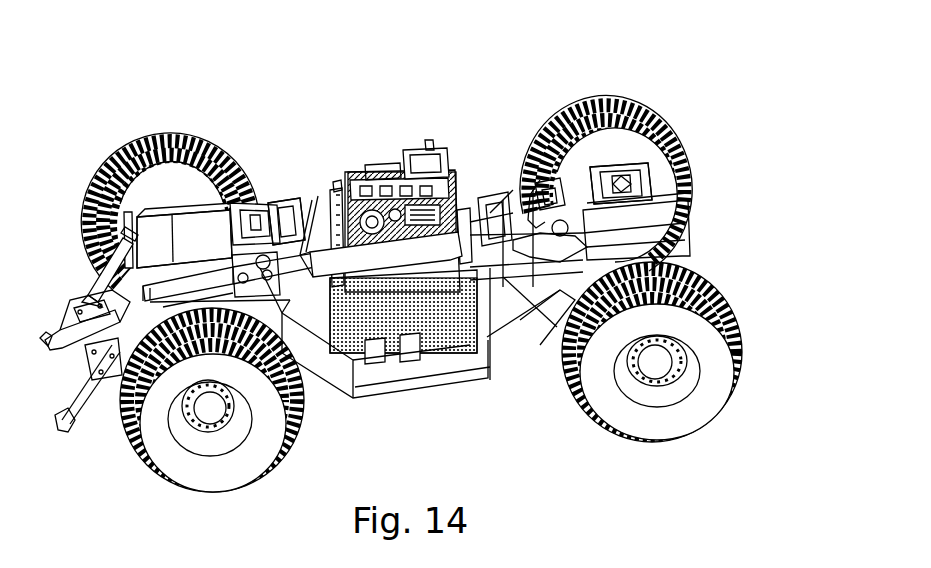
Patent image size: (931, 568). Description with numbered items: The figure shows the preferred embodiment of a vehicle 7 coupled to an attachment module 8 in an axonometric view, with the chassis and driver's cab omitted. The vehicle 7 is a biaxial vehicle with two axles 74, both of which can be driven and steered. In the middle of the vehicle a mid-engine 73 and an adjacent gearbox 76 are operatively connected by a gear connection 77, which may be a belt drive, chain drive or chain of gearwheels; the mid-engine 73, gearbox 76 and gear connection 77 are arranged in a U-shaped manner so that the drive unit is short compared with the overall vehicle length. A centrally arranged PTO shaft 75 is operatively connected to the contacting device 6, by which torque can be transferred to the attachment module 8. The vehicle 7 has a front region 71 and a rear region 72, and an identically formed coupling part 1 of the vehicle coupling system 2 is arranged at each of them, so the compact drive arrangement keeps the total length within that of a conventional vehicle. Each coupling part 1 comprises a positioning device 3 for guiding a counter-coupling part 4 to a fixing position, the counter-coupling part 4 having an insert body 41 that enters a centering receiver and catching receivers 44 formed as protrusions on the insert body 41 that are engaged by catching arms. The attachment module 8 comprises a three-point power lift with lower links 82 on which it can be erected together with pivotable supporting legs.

The coupling part 1 is at (285, 205).
The vehicle coupling system 2 is at (460, 204).
The positioning device 3 is at (623, 223).
The counter-coupling part 4 is at (147, 138).
The insert body 41 is at (184, 239).
The catching receiver 44 is at (213, 150).
The contacting device 6 is at (315, 198).
The vehicle 7 is at (520, 340).
The attachment module 8 is at (110, 265).
The front region 71 is at (720, 140).
The rear region 72 is at (243, 108).
The mid-engine 73 is at (433, 147).
The axle 74 is at (210, 412).
The PTO shaft 75 is at (450, 157).
The gearbox 76 is at (435, 348).
The gear connection 77 is at (492, 200).
The lower link 82 is at (73, 410).